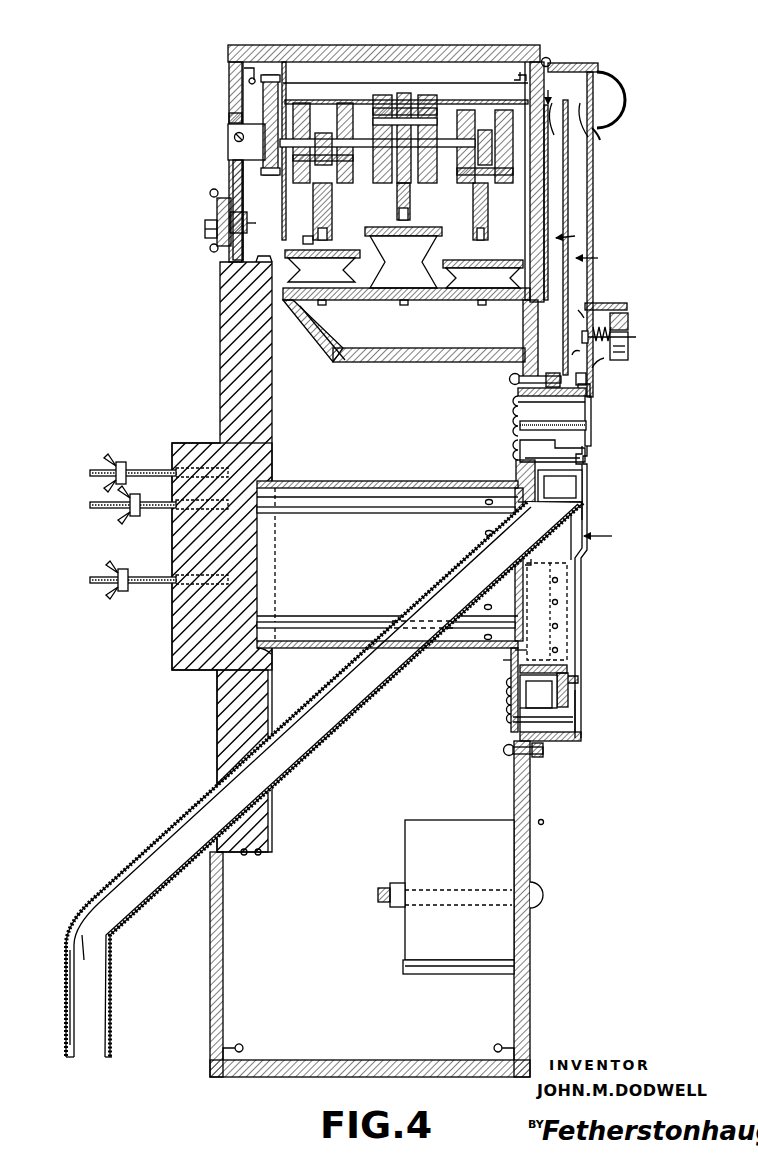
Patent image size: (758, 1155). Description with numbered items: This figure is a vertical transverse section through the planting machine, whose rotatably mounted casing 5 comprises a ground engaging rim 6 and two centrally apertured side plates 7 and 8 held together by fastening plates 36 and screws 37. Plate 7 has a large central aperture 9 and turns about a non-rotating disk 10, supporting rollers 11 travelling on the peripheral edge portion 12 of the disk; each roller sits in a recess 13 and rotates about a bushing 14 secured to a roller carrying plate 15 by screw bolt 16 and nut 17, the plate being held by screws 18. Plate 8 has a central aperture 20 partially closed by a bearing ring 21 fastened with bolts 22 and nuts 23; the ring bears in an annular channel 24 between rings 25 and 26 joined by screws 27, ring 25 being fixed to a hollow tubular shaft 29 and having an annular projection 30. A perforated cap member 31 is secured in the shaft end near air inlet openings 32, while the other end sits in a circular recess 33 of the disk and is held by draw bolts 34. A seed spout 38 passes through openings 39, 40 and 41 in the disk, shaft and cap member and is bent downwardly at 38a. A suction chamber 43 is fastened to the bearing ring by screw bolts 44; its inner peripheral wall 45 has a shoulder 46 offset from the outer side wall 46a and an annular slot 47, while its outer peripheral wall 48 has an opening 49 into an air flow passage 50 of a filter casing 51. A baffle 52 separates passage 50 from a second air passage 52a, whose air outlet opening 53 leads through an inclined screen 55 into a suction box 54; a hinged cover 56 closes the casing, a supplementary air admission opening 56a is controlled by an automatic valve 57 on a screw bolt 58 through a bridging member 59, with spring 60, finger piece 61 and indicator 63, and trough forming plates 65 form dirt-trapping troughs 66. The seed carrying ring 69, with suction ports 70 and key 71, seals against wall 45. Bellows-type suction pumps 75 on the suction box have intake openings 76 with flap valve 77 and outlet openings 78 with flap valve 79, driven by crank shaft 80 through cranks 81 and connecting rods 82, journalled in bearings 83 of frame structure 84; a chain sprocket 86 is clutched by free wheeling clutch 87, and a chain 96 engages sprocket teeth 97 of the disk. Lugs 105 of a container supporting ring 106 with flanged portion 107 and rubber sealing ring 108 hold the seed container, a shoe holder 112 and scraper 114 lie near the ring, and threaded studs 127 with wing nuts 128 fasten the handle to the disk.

The casing 5 is at (249, 14).
The ground engaging rim 6 is at (400, 46).
The side plate 7 is at (232, 171).
The side plate 8 is at (546, 218).
The central aperture 9 is at (224, 873).
The non-rotating disk 10 is at (222, 381).
The supporting rollers 11 is at (256, 261).
The peripheral edge portion 12 is at (228, 268).
The recess 13 is at (244, 191).
The bushing 14 is at (247, 214).
The roller carrying plate 15 is at (216, 212).
The screw bolt 16 is at (247, 230).
The nut 17 is at (205, 232).
The screws 18 is at (210, 193).
The central aperture 20 is at (518, 392).
The bearing ring 21 is at (522, 400).
The bolts 22 is at (510, 378).
The nuts 23 is at (588, 380).
The annular channel 24 is at (511, 676).
The ring 25 is at (504, 664).
The ring 26 is at (560, 486).
The screws 27 is at (515, 656).
The hollow tubular shaft 29 is at (340, 481).
The annular projection 30 is at (515, 476).
The cap member 31 is at (514, 594).
The air inlet openings 32 is at (486, 506).
The circular recess 33 is at (270, 656).
The draw bolts 34 is at (300, 517).
The fastening plates 36 is at (255, 70).
The screws 37 is at (295, 75).
The seed spout 38 is at (335, 738).
The downwardly bent lower end 38a is at (112, 968).
The opening 39 is at (260, 822).
The opening 40 is at (374, 630).
The opening 41 is at (539, 554).
The suction chamber 43 is at (592, 410).
The screw bolts 44 is at (570, 422).
The inner peripheral wall 45 is at (506, 692).
The outwardly facing shoulder 46 is at (538, 691).
The outer side wall 46a is at (580, 708).
The annular slot 47 is at (512, 446).
The outer peripheral wall 48 is at (514, 418).
The opening 49 is at (592, 393).
The air flow passage 50 is at (604, 258).
The filter casing 51 is at (594, 176).
The baffle 52 is at (568, 200).
The second air passage 52a is at (576, 236).
The air outlet opening 53 is at (522, 332).
The suction box 54 is at (364, 362).
The inclined screen 55 is at (556, 276).
The hinged cover 56 is at (612, 84).
The supplementary air admission opening 56a is at (604, 360).
The automatic valve 57 is at (606, 132).
The screw bolt 58 is at (572, 357).
The bridging member 59 is at (628, 318).
The valve regulating spring 60 is at (630, 336).
The finger piece 61 is at (628, 352).
The indicator 63 is at (628, 304).
The trough forming plates 65 is at (600, 118).
The troughs 66 is at (548, 92).
The seed carrying ring 69 is at (613, 536).
The suction ports 70 is at (556, 624).
The key 71 is at (556, 580).
The bellows-type suction pumps 75 is at (317, 258).
The air intake openings 76 is at (330, 302).
The flap valve 77 is at (407, 274).
The air outlet openings 78 is at (398, 252).
The flap valve 79 is at (418, 229).
The crank shaft 80 is at (365, 160).
The cranks 81 is at (318, 170).
The connecting rods 82 is at (313, 208).
The bearings 83 is at (310, 122).
The frame structure 84 is at (303, 240).
The chain sprocket 86 is at (240, 118).
The free wheeling clutch 87 is at (236, 137).
The chain 96 is at (248, 854).
The sprocket teeth 97 is at (260, 856).
The lugs 105 is at (588, 462).
The container supporting ring 106 is at (580, 486).
The flanged portion 107 is at (565, 448).
The rubber sealing ring 108 is at (578, 678).
The shoe holder 112 is at (562, 628).
The scraper 114 is at (570, 498).
The threaded studs 127 is at (94, 502).
The wing nuts 128 is at (140, 488).